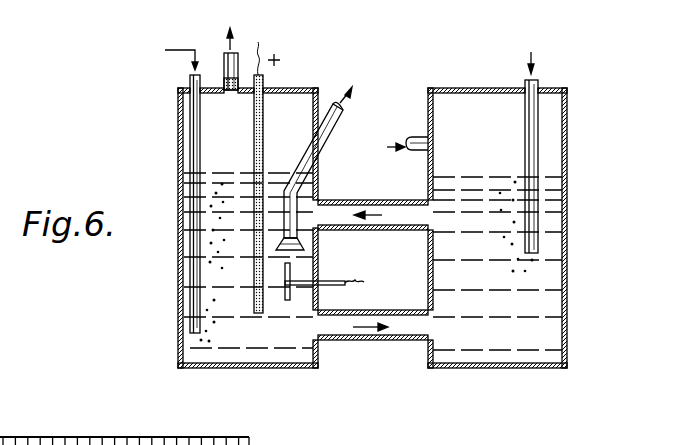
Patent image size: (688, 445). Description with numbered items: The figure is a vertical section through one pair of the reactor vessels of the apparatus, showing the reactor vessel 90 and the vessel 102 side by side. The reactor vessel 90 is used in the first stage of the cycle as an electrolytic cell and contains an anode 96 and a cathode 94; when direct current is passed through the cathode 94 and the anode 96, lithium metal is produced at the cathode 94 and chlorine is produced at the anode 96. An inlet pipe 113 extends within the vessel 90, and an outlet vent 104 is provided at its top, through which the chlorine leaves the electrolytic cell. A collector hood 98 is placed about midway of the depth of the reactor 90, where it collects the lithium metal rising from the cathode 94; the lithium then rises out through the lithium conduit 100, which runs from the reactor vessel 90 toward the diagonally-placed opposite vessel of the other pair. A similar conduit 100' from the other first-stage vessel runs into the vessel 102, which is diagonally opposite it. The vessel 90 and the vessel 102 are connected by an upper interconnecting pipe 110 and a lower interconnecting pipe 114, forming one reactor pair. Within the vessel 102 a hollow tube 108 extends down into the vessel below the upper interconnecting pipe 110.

The reactor vessel 90 is at (181, 150).
The inlet pipe 113 is at (190, 80).
The outlet vent 104 is at (224, 60).
The anode 96 is at (265, 84).
The conduit 100 is at (328, 153).
The collector hood 98 is at (304, 244).
The cathode 94 is at (343, 272).
The lower interconnecting pipe 114 is at (382, 310).
The upper interconnecting pipe 110 is at (342, 200).
The conduit 100' is at (400, 156).
The hollow tube 108 is at (536, 87).
The reactor vessel 102 is at (567, 272).